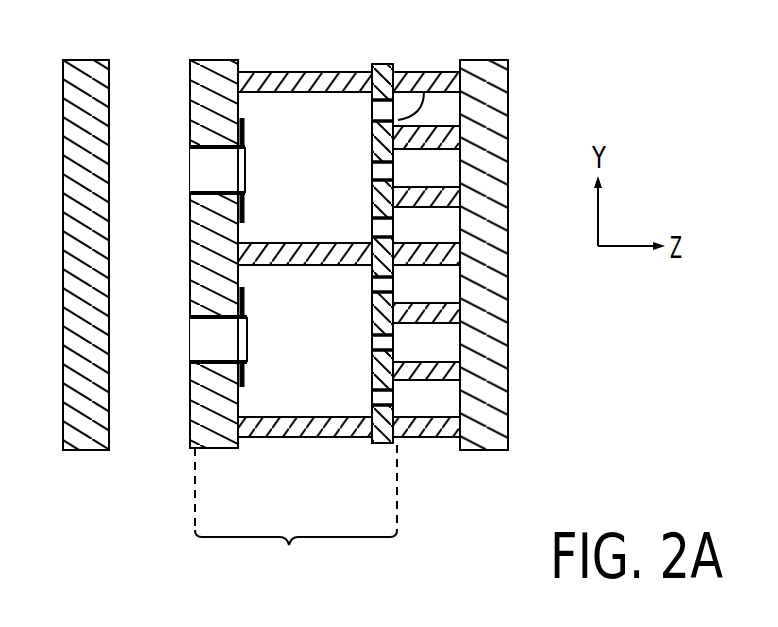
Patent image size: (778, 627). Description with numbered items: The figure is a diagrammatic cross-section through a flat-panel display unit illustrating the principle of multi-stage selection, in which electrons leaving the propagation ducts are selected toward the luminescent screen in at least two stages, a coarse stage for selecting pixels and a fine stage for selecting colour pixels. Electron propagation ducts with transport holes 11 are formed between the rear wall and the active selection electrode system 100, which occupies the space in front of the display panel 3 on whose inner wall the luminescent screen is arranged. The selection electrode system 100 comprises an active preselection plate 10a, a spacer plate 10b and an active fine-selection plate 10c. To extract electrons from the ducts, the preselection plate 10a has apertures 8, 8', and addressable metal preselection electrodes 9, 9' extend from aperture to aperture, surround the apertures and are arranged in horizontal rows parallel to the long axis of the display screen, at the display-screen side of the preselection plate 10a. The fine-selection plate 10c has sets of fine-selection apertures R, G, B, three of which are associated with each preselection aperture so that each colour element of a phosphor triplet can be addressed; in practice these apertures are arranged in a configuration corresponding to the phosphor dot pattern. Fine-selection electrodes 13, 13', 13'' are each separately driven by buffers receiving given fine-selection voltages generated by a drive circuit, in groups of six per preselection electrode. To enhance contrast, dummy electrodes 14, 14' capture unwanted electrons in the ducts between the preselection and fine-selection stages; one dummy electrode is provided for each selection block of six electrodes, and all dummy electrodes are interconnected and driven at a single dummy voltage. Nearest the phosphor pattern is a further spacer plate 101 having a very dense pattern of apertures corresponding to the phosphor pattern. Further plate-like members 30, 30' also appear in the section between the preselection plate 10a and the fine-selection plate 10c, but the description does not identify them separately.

The transport hole 11 is at (137, 80).
The preselection plate 10a is at (218, 438).
The aperture 8 is at (229, 98).
The preselection electrode 9 is at (259, 171).
The aperture 8' is at (189, 412).
The preselection electrode 9' is at (262, 331).
The partition plate 30 is at (305, 134).
The spacer plate 10b is at (335, 437).
The second partition plate 30' is at (268, 291).
The dummy electrode 14 is at (361, 223).
The dummy electrode 14' is at (345, 341).
The fine-selection plate 10c is at (385, 443).
The fine-selection aperture R is at (409, 68).
The display panel 3 is at (460, 93).
The fine-selection electrode 13 is at (426, 76).
The fine-selection electrode 13' is at (471, 157).
The fine-selection aperture G is at (397, 174).
The fine-selection aperture B is at (397, 227).
The fine-selection electrode 13'' is at (476, 322).
The spacer plate 101 is at (440, 438).
The active selection electrode system 100 is at (296, 516).